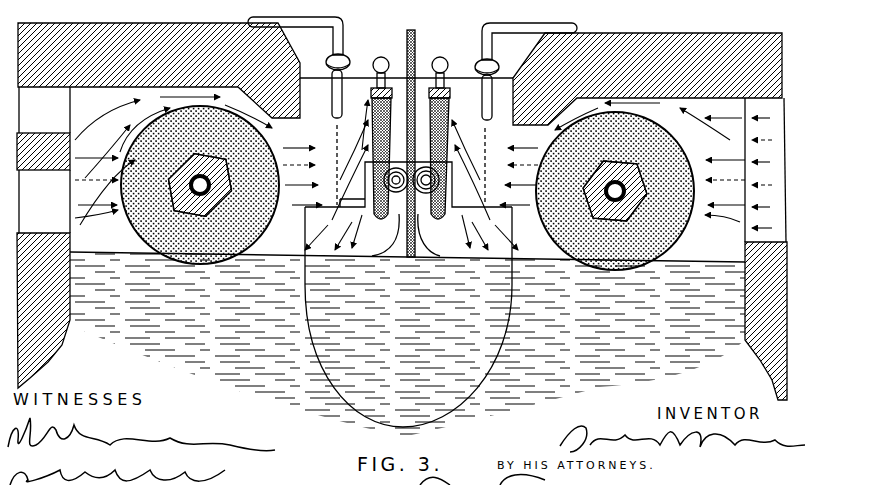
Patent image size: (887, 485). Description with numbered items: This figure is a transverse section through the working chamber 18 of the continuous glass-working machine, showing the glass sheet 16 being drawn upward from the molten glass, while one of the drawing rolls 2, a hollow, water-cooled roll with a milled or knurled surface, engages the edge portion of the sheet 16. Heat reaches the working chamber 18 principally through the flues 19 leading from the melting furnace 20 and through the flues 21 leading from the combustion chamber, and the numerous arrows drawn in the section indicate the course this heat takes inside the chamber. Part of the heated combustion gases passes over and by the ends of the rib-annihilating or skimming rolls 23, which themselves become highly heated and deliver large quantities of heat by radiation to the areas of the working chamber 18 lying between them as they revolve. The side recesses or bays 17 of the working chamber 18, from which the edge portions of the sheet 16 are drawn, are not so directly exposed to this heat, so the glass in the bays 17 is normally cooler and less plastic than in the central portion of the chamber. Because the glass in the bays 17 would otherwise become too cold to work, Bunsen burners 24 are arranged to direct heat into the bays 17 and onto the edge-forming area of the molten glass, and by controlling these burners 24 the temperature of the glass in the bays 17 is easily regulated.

The roll 2 is at (392, 152).
The sheet 16 is at (418, 44).
The side recesses or bays 17 is at (382, 218).
The working chamber 18 is at (786, 248).
The flues 19 is at (767, 125).
The melting furnace 20 is at (68, 204).
The flues 21 is at (400, 62).
The rib-annihilating or skimming rolls 23 is at (140, 100).
The Bunsen burners 24 is at (326, 80).